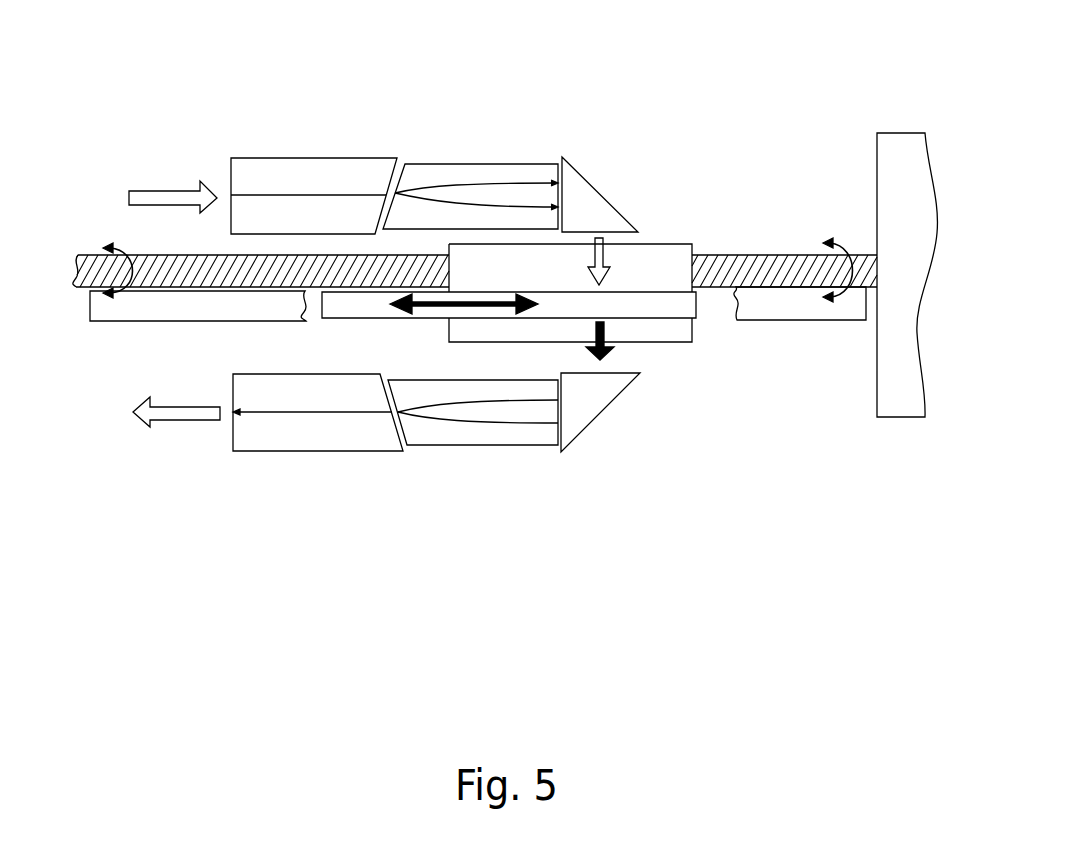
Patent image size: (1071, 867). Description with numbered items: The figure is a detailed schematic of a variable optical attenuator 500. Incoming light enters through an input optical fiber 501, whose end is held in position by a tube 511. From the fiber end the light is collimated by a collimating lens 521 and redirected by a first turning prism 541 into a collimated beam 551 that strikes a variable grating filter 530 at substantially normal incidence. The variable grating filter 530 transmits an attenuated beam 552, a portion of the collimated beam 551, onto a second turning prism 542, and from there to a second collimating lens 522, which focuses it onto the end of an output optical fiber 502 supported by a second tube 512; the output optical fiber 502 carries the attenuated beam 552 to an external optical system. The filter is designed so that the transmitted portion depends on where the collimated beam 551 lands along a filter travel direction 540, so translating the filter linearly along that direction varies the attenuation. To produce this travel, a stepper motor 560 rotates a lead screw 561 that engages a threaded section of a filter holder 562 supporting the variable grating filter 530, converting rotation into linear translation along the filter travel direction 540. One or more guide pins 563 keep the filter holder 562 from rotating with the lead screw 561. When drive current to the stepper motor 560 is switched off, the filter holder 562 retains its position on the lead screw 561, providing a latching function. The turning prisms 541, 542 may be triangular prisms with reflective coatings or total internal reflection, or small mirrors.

The variable optical attenuator 500 is at (257, 602).
The input optical fiber 501 is at (170, 190).
The output optical fiber 502 is at (170, 421).
The tube 511 is at (313, 176).
The second tube 512 is at (272, 440).
The collimating lens 521 is at (445, 178).
The collimating lens 522 is at (463, 438).
The variable grating filter 530 is at (653, 308).
The filter travel direction 540 is at (473, 303).
The first turning prism 541 is at (590, 203).
The second turning prism 542 is at (595, 395).
The collimated beam 551 is at (608, 262).
The attenuated beam 552 is at (610, 333).
The stepper motor 560 is at (905, 402).
The lead screw 561 is at (788, 263).
The filter holder 562 is at (503, 282).
The guide pins 563 is at (160, 302).